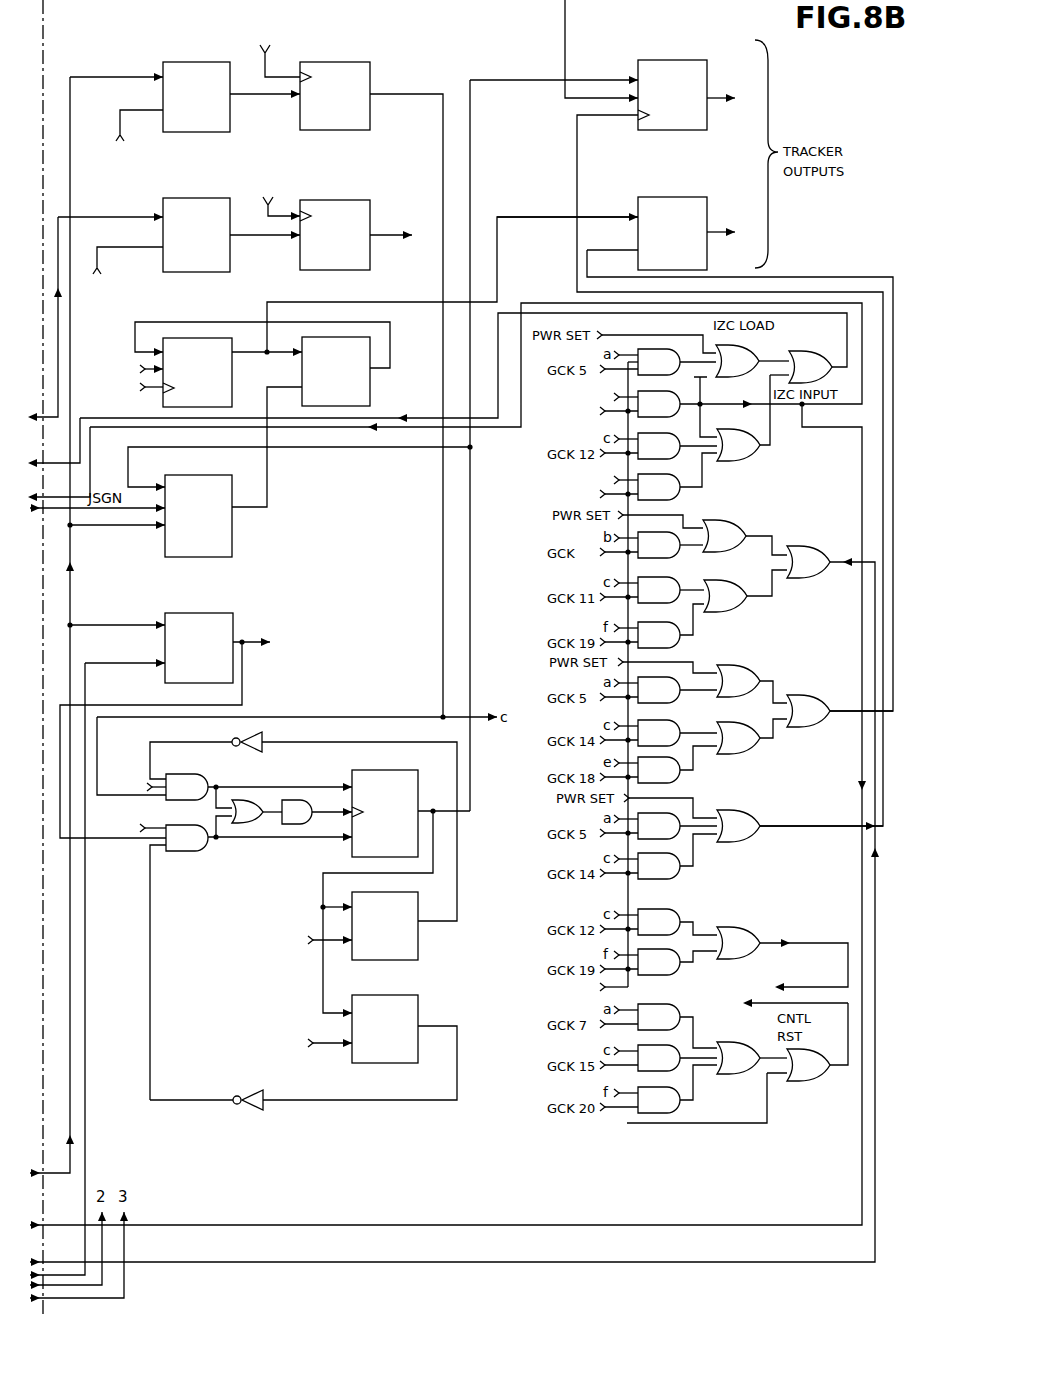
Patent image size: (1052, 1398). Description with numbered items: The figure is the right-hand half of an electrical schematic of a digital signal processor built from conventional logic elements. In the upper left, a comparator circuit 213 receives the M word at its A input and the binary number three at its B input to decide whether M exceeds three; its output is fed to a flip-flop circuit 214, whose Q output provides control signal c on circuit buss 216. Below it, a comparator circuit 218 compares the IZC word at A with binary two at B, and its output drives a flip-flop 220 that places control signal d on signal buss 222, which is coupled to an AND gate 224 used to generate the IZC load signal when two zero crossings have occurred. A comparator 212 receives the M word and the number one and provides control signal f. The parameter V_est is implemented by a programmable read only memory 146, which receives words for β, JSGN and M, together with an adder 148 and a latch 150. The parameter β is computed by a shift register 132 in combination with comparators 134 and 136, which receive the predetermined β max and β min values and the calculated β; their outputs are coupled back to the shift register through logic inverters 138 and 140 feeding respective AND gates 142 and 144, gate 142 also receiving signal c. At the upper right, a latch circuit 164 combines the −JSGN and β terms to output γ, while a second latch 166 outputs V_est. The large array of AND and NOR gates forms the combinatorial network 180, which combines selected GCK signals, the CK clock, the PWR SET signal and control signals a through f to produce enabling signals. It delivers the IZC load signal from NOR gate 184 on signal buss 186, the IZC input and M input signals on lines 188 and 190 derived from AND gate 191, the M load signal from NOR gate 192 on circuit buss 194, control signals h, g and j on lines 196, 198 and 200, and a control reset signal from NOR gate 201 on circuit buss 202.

The comparator circuit 213 is at (200, 62).
The flip-flop circuit 214 is at (338, 62).
The comparator circuit 218 is at (184, 198).
The flip-flop 220 is at (332, 200).
The signal buss 222 is at (388, 235).
The circuit buss 216 is at (443, 628).
The latch circuit 164 is at (682, 60).
The second latch 166 is at (655, 197).
The latch 150 is at (232, 370).
The adder 148 is at (370, 398).
The programmable read only memory 146 is at (232, 525).
The comparator 212 is at (205, 613).
The logic inverter 138 is at (258, 750).
The AND gate 142 is at (178, 774).
The AND gate 144 is at (178, 851).
The shift register 132 is at (392, 770).
The comparator 134 is at (418, 958).
The comparator 136 is at (400, 1063).
The logic inverter 140 is at (244, 1110).
The combinatorial network 180 is at (528, 561).
The NOR gate 184 is at (795, 355).
The signal buss 186 is at (840, 352).
The line 188 is at (862, 375).
The line 190 is at (862, 470).
The AND gate 191 is at (681, 391).
The NOR gate 192 is at (806, 552).
The line 196 is at (840, 720).
The line 198 is at (833, 828).
The line 200 is at (803, 943).
The NOR gate 201 is at (750, 1076).
The circuit buss 202 is at (833, 1082).
The AND gate 224 is at (684, 497).
The circuit buss 194 is at (312, 1264).